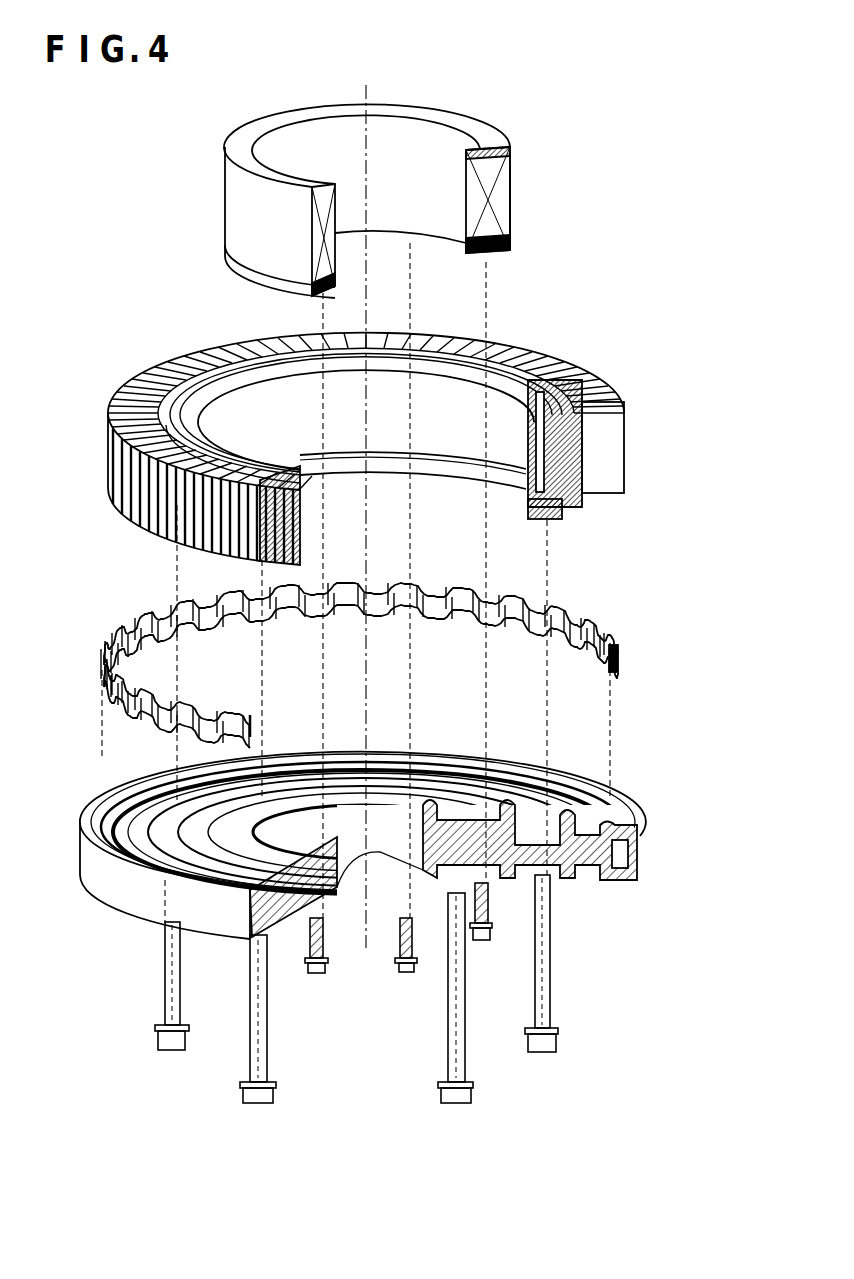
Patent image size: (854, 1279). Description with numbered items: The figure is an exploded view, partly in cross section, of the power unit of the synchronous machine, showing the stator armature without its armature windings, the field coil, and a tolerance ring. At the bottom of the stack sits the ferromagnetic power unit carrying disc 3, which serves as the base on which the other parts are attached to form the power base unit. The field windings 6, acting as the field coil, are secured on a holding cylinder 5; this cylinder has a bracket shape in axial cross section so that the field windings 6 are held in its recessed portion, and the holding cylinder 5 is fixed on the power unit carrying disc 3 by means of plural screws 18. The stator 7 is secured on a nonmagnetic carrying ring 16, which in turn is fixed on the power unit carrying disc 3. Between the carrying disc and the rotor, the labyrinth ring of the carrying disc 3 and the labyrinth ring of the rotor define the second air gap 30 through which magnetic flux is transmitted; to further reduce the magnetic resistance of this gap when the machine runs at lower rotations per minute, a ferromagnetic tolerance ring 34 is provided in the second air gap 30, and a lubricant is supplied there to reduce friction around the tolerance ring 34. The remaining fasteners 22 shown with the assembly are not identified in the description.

The power unit carrying disc 3 is at (148, 892).
The holding cylinder 5 is at (511, 252).
The field windings 6 is at (493, 195).
The stator 7 is at (583, 450).
The nonmagnetic carrying ring 16 is at (561, 518).
The screws 18 is at (400, 975).
The bolts 22 is at (453, 1040).
The second air gap 30 is at (638, 842).
The tolerance ring 34 is at (606, 636).